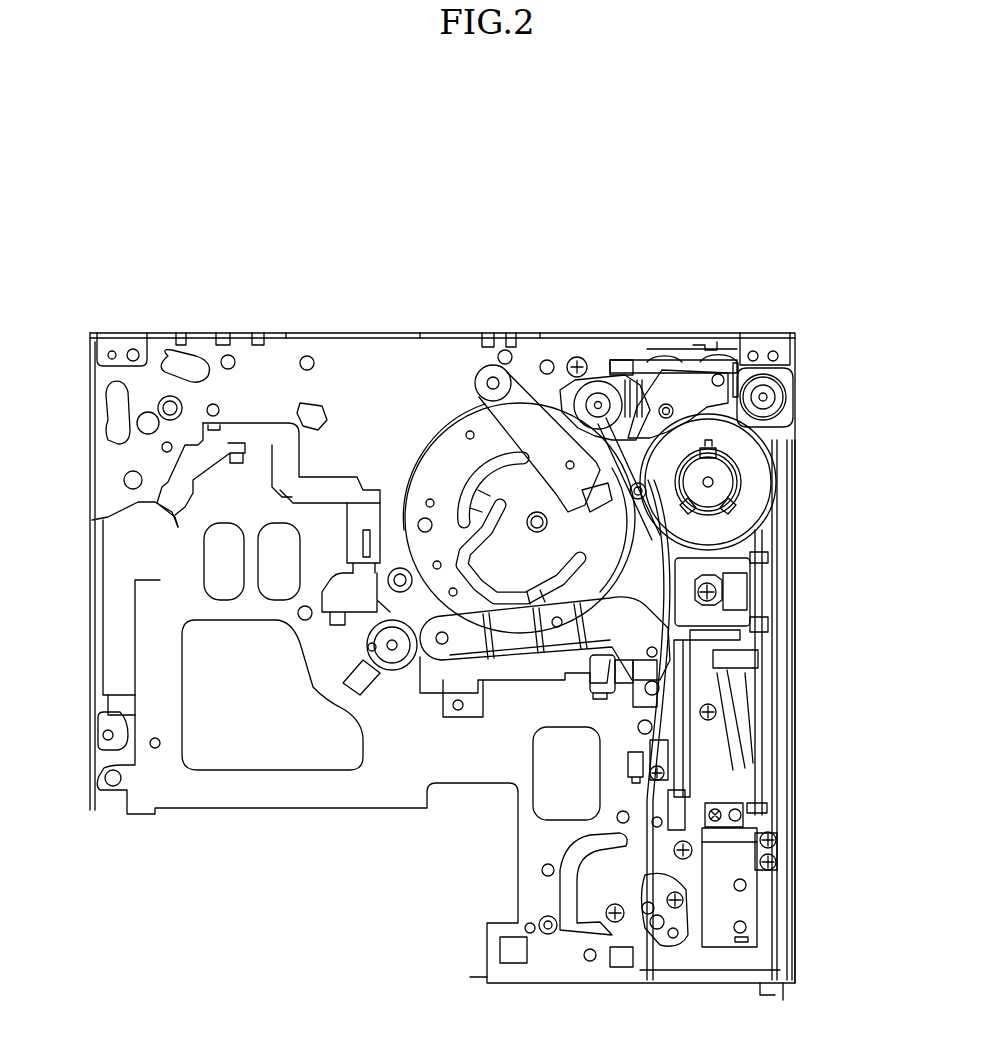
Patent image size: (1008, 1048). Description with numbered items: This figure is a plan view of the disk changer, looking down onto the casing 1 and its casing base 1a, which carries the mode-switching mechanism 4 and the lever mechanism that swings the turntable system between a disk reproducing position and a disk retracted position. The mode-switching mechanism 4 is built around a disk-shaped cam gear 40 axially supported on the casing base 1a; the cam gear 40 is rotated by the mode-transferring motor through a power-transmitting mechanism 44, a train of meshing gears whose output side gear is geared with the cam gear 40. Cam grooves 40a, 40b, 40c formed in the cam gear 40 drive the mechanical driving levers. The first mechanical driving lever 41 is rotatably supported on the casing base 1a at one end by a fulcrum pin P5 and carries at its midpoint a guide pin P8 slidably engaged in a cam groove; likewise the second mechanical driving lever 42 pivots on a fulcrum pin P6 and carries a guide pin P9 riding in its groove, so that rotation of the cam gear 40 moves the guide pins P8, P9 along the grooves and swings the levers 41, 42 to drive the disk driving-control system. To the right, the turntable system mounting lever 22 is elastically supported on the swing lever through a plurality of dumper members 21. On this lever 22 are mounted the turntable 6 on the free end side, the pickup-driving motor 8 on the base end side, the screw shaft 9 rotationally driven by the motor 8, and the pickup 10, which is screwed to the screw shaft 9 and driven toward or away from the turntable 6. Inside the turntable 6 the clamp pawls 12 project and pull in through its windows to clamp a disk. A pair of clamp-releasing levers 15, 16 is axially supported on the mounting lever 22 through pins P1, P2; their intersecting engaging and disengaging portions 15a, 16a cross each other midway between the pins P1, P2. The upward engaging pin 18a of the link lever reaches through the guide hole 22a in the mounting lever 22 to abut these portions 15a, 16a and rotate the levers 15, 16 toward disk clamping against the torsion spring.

The casing 1 is at (442, 666).
The casing base 1a is at (286, 372).
The mode-switching mechanism 4 is at (415, 252).
The cam gear 40 is at (484, 443).
The cam groove 40a is at (503, 462).
The cam groove 40b is at (615, 537).
The cam groove 40c is at (484, 588).
The first mechanical driving lever 41 is at (498, 382).
The second mechanical driving lever 42 is at (486, 737).
The power-transmitting mechanism 44 is at (727, 350).
The turntable 6 is at (770, 396).
The pickup-driving motor 8 is at (740, 902).
The screw shaft 9 is at (757, 760).
The pickup 10 is at (723, 618).
The clamp pawls 12 is at (723, 498).
The clamp-releasing lever 15 is at (659, 398).
The intersecting engaging and disengaging portion 15a is at (580, 392).
The clamp-releasing lever 16 is at (660, 533).
The intersecting engaging and disengaging portion 16a is at (575, 404).
The engaging pin 18a is at (612, 375).
The dumper members 21 is at (797, 376).
The turntable system mounting lever 22 is at (793, 655).
The guide hole 22a is at (657, 440).
The pin P1 is at (665, 404).
The pin P2 is at (645, 488).
The fulcrum pin P5 is at (489, 377).
The fulcrum pin P6 is at (439, 644).
The guide pin P8 is at (561, 493).
The guide pin P9 is at (555, 628).